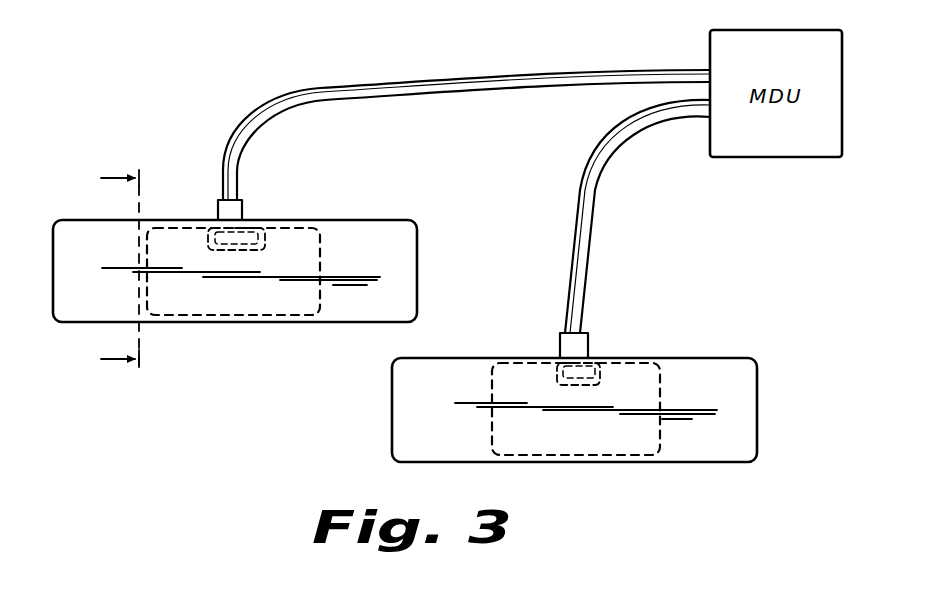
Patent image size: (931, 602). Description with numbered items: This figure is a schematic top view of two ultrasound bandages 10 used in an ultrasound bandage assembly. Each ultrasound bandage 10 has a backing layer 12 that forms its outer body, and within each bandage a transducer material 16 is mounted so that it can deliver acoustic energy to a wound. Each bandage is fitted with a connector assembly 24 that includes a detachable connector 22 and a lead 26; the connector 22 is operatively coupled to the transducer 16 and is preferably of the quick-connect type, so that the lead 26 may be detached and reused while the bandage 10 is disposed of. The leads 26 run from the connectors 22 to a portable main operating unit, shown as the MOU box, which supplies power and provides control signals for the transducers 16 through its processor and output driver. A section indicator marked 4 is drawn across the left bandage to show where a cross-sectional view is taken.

The section line 4- 4 is at (120, 273).
The ultrasound bandage 10 is at (428, 188).
The backing layer 12 is at (335, 303).
The transducer material 16 is at (320, 240).
The detachable connector 22 is at (233, 208).
The connector assembly 24 is at (219, 150).
The lead 26 is at (531, 73).